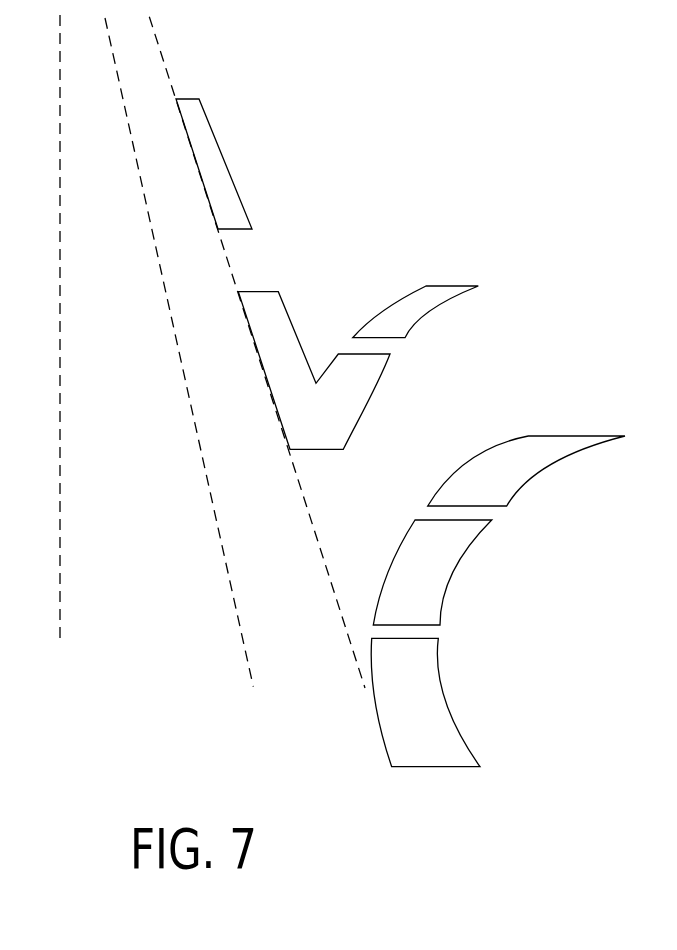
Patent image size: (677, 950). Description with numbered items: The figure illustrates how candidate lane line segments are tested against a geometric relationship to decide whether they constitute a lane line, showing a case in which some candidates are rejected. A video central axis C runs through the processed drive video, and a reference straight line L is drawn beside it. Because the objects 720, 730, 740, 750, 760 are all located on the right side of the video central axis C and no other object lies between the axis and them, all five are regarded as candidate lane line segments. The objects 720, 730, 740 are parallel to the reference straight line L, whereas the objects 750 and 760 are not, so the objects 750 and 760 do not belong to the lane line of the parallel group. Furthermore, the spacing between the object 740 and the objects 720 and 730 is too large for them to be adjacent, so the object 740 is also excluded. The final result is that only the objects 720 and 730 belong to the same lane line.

The object 720 is at (233, 202).
The object 730 is at (285, 338).
The object 740 is at (433, 697).
The object 750 is at (441, 573).
The object 760 is at (513, 478).
The video central axis C is at (58, 352).
The reference straight line L is at (218, 520).